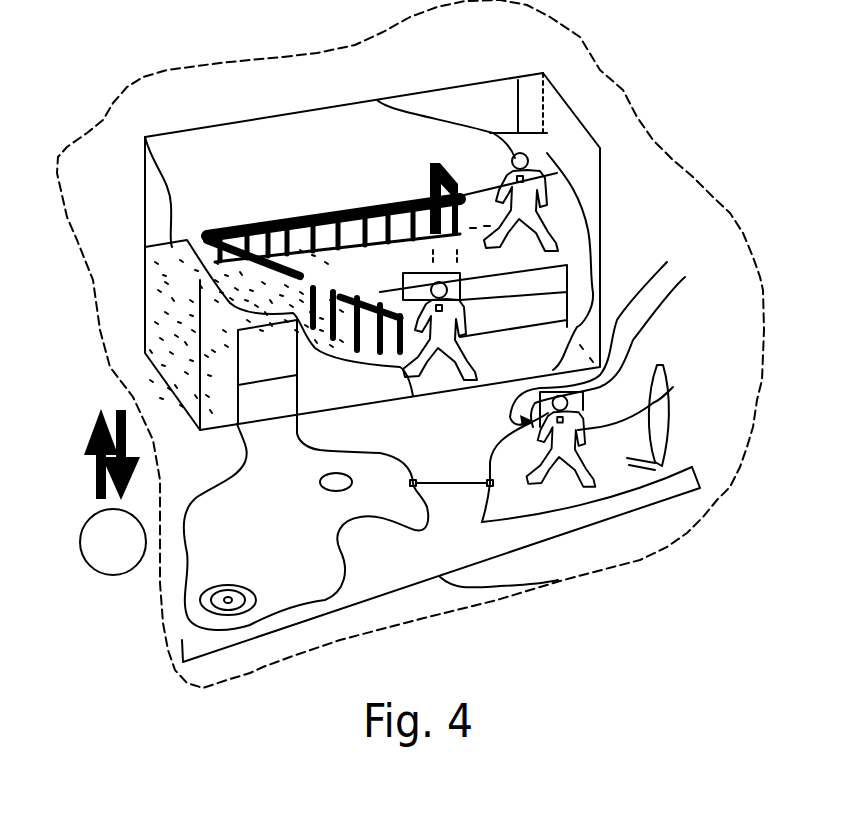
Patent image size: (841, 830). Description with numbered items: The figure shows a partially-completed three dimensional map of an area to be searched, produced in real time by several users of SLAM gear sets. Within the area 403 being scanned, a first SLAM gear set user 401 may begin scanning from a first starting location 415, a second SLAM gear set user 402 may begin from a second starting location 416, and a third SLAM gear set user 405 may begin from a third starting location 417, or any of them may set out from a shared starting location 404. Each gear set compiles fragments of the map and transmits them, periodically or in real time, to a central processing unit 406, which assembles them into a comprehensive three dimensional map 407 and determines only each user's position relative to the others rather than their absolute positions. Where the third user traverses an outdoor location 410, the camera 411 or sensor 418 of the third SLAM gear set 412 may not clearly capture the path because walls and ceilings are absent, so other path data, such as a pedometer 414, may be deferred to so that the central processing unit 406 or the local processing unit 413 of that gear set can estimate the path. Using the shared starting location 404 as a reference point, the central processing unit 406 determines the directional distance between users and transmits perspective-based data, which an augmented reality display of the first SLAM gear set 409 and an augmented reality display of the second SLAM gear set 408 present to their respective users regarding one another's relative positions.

The first SLAM gear set user 401 is at (541, 74).
The second SLAM gear set user 402 is at (424, 283).
The area 403 is at (623, 93).
The shared starting location 404 is at (192, 619).
The third SLAM gear set user 405 is at (560, 425).
The central processing unit 406 is at (110, 543).
The comprehensive three dimensional map 407 is at (84, 176).
The augmented reality display of the second SLAM gear set 408 is at (596, 300).
The augmented reality display of the first SLAM gear set 409 is at (505, 150).
The outdoor location 410 is at (553, 583).
The camera 411 is at (627, 378).
The third SLAM gear set 412 is at (667, 262).
The local processing unit 413 is at (690, 270).
The pedometer 414 is at (668, 464).
The first starting location 415 is at (234, 610).
The second starting location 416 is at (230, 607).
The third starting location 417 is at (322, 489).
The sensor 418 is at (673, 387).